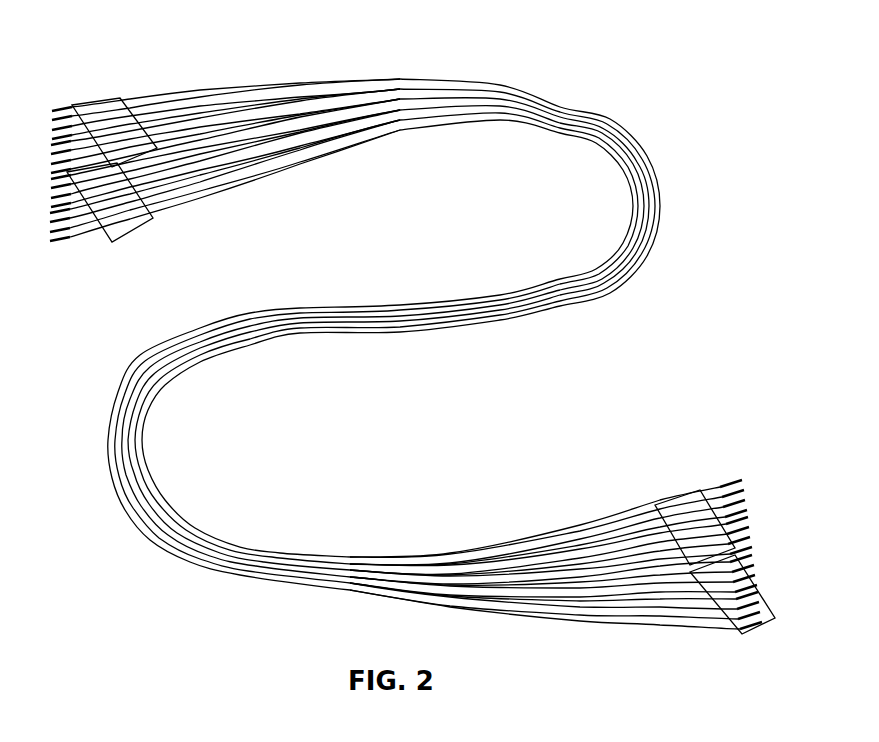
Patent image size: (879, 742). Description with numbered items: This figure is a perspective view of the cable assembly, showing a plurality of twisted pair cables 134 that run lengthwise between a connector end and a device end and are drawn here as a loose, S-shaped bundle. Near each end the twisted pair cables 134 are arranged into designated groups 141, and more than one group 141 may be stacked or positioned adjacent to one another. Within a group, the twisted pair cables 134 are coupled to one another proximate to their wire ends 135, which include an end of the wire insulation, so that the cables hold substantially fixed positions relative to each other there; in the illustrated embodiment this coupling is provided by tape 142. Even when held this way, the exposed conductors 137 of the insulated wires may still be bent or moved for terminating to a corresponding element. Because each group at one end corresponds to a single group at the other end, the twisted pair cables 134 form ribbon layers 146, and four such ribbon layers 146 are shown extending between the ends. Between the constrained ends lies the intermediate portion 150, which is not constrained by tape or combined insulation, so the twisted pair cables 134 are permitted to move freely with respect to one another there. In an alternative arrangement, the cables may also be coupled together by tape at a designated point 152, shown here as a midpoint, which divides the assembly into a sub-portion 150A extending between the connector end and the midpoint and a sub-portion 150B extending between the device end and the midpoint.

The twisted pair cables 134 is at (240, 120).
The wire ends 135 is at (72, 113).
The exposed conductors 137 is at (100, 243).
The designated groups 141 is at (737, 611).
The tape 142 is at (70, 104).
The ribbon layer 146 is at (230, 202).
The intermediate portion 150 is at (165, 68).
The sub-portion 150A is at (575, 178).
The sub-portion 150B is at (170, 495).
The designated point 152 is at (385, 347).